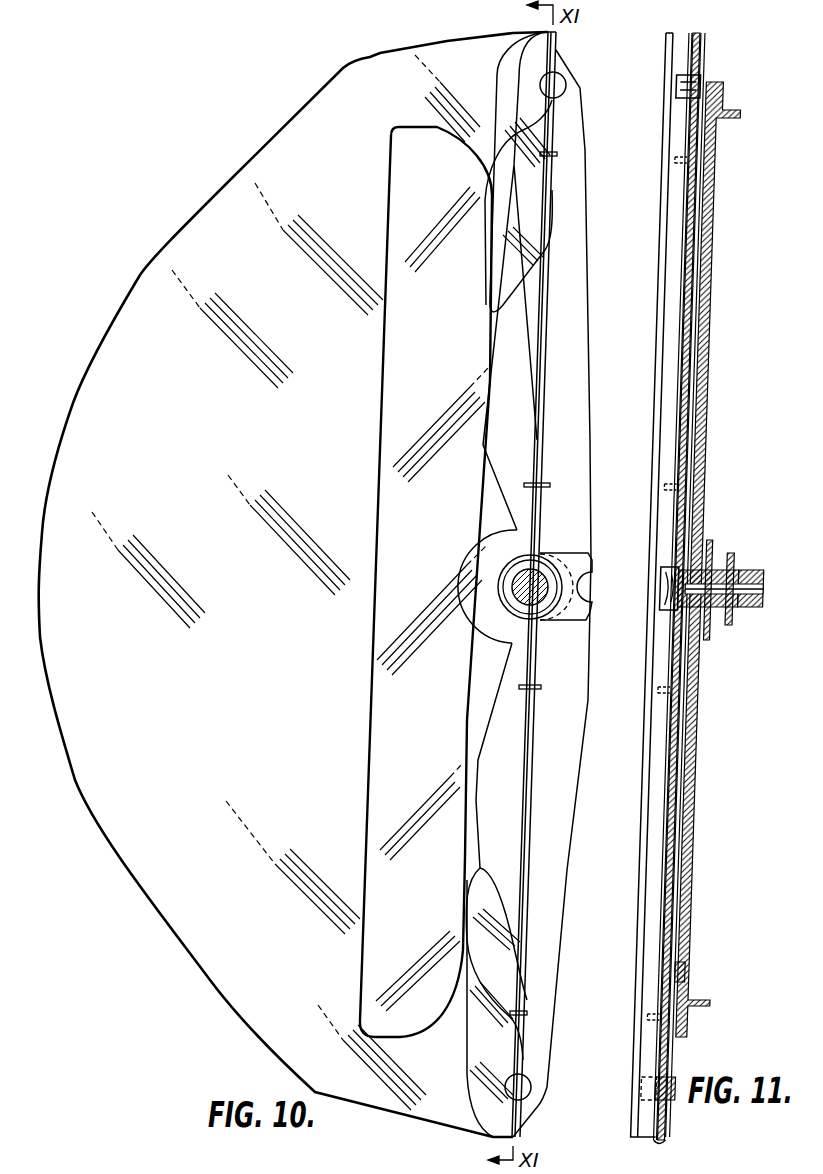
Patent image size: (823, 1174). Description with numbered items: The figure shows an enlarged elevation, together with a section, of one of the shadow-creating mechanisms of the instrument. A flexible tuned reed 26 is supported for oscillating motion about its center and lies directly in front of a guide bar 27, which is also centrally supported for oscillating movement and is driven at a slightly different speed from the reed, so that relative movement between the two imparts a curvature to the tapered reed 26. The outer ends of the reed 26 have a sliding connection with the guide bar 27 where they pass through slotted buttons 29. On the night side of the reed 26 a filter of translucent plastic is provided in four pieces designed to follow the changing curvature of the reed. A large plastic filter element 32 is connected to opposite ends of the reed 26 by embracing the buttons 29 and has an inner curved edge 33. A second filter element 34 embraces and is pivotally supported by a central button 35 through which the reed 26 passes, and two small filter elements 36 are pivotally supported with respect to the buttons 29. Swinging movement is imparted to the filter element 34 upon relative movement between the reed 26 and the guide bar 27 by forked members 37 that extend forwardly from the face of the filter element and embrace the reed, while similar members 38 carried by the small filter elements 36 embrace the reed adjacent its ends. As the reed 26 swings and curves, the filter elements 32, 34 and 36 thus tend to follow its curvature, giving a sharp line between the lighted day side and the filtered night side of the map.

In FIG. 10, the flexible tuned reed 26 is at (540, 57).
In FIG. 11, the flexible tuned reed 26 is at (665, 769).
In FIG. 10, the guide bar 27 is at (590, 271).
In FIG. 11, the guide bar 27 is at (708, 70).
In FIG. 10, the slotted button 29 is at (560, 82).
In FIG. 11, the slotted button 29 is at (676, 98).
In FIG. 10, the large plastic filter element 32 is at (236, 451).
In FIG. 11, the large plastic filter element 32 is at (707, 42).
In FIG. 10, the inner curved edge 33 is at (491, 386).
In FIG. 10, the second filter element 34 is at (441, 516).
In FIG. 10, the central button 35 is at (547, 566).
In FIG. 11, the central button 35 is at (676, 567).
In FIG. 10, the small filter element 36 is at (502, 66).
In FIG. 11, the small filter element 36 is at (697, 1142).
In FIG. 10, the forked member 37 is at (549, 484).
In FIG. 10, the forked member 38 is at (558, 155).